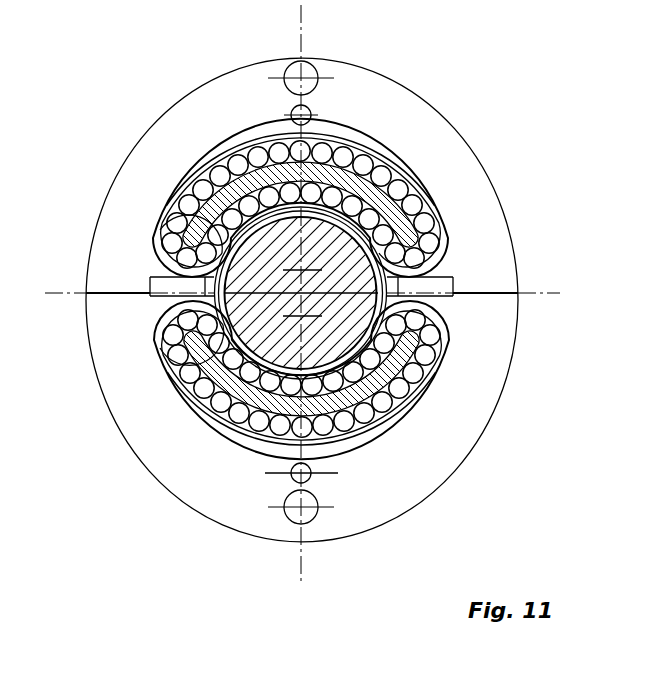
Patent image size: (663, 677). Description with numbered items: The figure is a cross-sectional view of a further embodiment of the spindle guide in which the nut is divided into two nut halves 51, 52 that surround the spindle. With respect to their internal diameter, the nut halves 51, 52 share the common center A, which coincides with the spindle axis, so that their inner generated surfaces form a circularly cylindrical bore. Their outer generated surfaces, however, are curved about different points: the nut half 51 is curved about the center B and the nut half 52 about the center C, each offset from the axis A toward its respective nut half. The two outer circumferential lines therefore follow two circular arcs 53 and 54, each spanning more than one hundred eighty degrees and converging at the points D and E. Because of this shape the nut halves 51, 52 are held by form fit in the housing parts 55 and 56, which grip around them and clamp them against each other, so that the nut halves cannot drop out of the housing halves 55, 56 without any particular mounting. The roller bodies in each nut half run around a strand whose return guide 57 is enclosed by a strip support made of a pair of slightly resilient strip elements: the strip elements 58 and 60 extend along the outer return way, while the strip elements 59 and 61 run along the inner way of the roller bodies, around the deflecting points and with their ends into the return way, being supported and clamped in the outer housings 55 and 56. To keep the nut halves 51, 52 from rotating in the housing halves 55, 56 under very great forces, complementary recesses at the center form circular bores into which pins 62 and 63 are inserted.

The nut half 51 is at (373, 150).
The nut half 52 is at (353, 390).
The circular arc 53 is at (337, 121).
The circular arc 54 is at (377, 453).
The housing half 55 is at (162, 163).
The housing half 56 is at (160, 437).
The ball return guide 57 is at (160, 374).
The strip element 58 is at (230, 150).
The strip element 59 is at (157, 242).
The strip element 60 is at (250, 434).
The strip element 61 is at (155, 328).
The pin 62 is at (293, 477).
The pin 63 is at (311, 114).
The spindle axis A is at (402, 243).
The center B is at (394, 222).
The center C is at (438, 347).
The convergence point D is at (455, 292).
The convergence point E is at (150, 292).